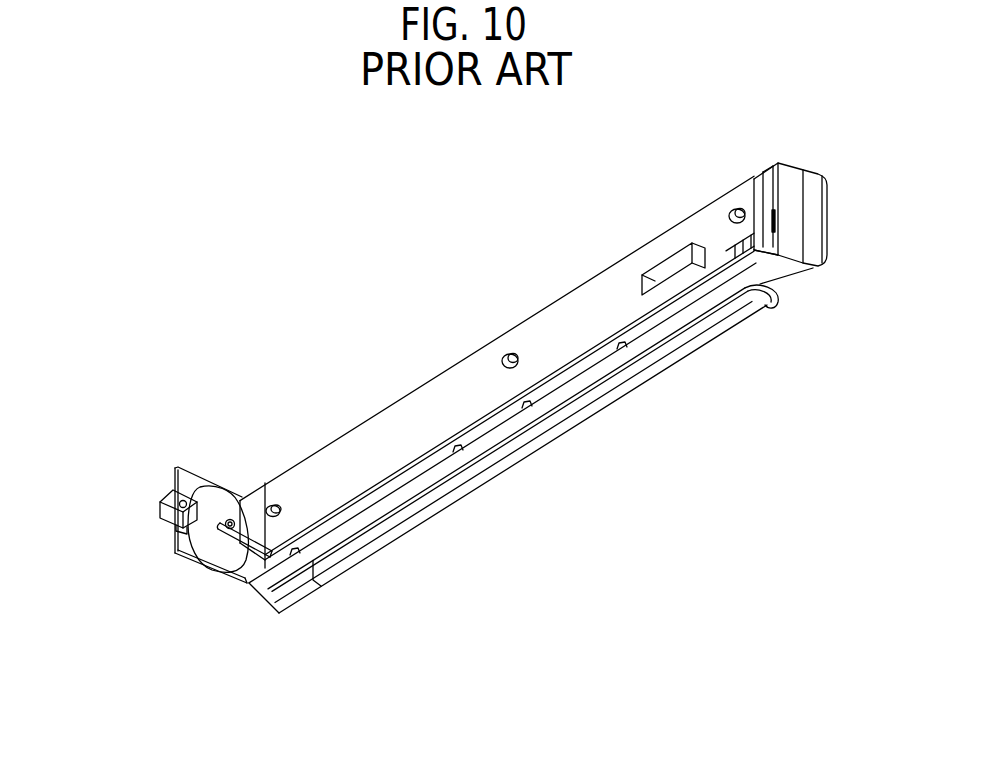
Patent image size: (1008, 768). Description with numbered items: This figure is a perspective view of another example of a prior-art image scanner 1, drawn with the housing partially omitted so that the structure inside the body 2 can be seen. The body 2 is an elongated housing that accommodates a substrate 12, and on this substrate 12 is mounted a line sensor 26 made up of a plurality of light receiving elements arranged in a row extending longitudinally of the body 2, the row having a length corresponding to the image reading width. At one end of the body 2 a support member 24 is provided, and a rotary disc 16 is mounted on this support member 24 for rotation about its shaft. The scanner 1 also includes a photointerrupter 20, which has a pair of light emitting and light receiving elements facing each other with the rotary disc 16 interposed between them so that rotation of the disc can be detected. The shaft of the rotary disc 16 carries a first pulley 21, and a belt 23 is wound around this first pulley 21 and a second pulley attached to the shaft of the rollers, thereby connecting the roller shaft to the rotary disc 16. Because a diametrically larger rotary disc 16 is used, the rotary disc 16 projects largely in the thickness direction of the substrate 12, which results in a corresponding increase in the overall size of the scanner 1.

The scanner 1 is at (692, 395).
The body 2 is at (794, 165).
The substrate 12 is at (447, 380).
The rotary disc 16 is at (208, 550).
The photointerrupter 20 is at (162, 513).
The first pulley 21 is at (229, 518).
The belt 23 is at (239, 512).
The support member 24 is at (190, 468).
The line sensor 26 is at (252, 598).